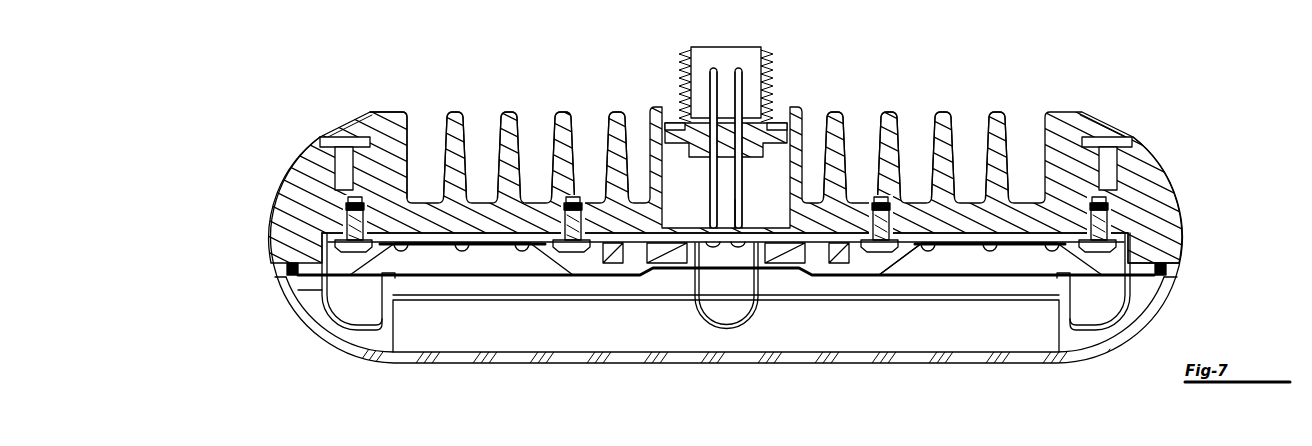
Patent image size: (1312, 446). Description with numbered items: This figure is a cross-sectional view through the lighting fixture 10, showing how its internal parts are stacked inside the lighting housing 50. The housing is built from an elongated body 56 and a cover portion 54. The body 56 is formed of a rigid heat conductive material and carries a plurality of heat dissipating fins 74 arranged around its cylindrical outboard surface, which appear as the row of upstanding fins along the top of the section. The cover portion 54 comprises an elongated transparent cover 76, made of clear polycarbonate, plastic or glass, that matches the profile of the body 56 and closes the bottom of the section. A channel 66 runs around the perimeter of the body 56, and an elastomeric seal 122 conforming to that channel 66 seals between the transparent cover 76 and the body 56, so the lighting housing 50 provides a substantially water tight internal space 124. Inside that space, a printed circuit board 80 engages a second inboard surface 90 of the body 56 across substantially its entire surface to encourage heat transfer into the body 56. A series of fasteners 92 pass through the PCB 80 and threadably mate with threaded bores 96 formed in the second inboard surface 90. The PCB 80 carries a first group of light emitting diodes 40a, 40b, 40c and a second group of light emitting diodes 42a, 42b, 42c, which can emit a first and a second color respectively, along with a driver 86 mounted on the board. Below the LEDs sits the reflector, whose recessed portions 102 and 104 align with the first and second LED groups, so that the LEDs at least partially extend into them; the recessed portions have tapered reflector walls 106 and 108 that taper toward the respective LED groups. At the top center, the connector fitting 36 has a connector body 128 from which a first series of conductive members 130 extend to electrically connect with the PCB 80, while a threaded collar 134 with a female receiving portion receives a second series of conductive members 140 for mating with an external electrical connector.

The lighting fixture 10 is at (233, 143).
The connector fitting 36 is at (773, 54).
The light emitting diode 40a is at (401, 253).
The light emitting diode 40b is at (462, 253).
The light emitting diode 40c is at (522, 253).
The light emitting diode 42a is at (928, 253).
The light emitting diode 42b is at (990, 253).
The light emitting diode 42c is at (1052, 253).
The lighting housing 50 is at (1141, 114).
The cover portion 54 is at (463, 362).
The elongated body 56 is at (382, 112).
The channel 66 is at (1168, 270).
The heat dissipating fins 74 is at (455, 112).
The transparent cover 76 is at (323, 342).
The printed circuit board 80 is at (1023, 222).
The driver 86 is at (805, 268).
The second inboard surface 90 is at (1057, 233).
The fasteners 92 is at (346, 228).
The threaded bores 96 is at (345, 208).
The recessed portion 102 is at (548, 255).
The recessed portion 104 is at (917, 253).
The tapered reflector wall 106 is at (370, 276).
The tapered reflector wall 108 is at (900, 258).
The elastomeric seal 122 is at (1168, 250).
The internal space 124 is at (1013, 262).
The connector body 128 is at (755, 152).
The conductive members 130 is at (735, 213).
The threaded collar 134 is at (686, 58).
The conductive members 140 is at (738, 70).